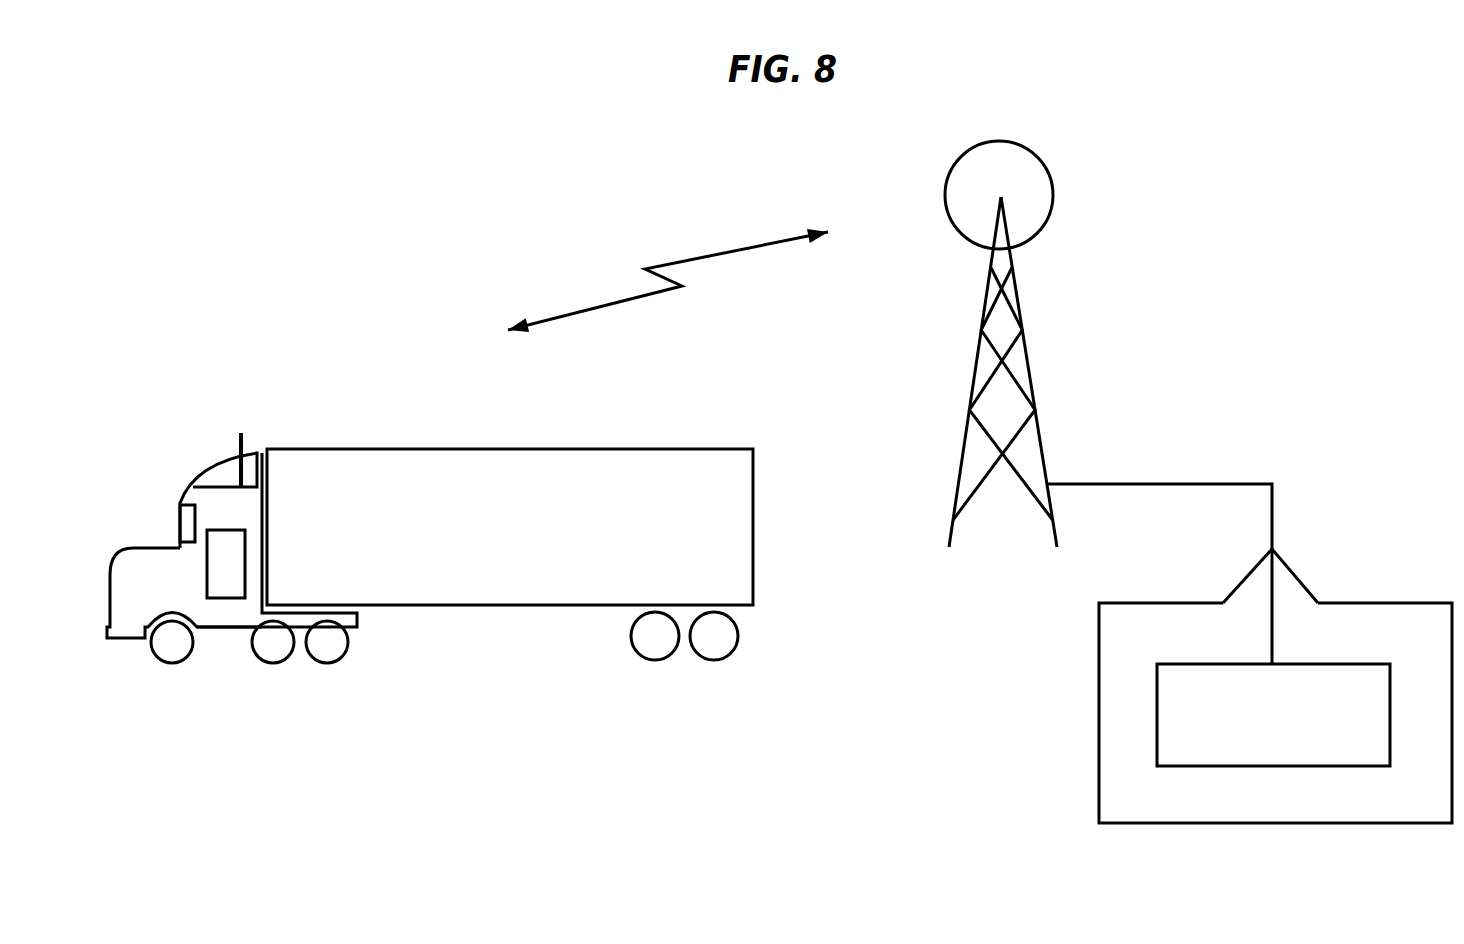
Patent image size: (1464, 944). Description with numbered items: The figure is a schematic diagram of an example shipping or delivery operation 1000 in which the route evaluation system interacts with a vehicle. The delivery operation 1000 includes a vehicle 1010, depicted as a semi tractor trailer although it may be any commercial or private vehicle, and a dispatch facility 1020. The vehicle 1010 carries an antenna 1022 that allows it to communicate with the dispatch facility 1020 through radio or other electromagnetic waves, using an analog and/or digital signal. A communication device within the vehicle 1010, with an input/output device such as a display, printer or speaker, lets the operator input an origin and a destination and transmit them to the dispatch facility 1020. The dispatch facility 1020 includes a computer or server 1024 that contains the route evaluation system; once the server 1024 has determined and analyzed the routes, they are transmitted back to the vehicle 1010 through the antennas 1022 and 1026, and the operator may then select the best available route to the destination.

The shipping or delivery operation 1000 is at (165, 354).
The vehicle 1010 is at (503, 577).
The antenna 1022 is at (242, 452).
The antenna 1026 is at (1030, 357).
The dispatch facility 1020 is at (1390, 620).
The computer or server 1024 is at (1355, 745).